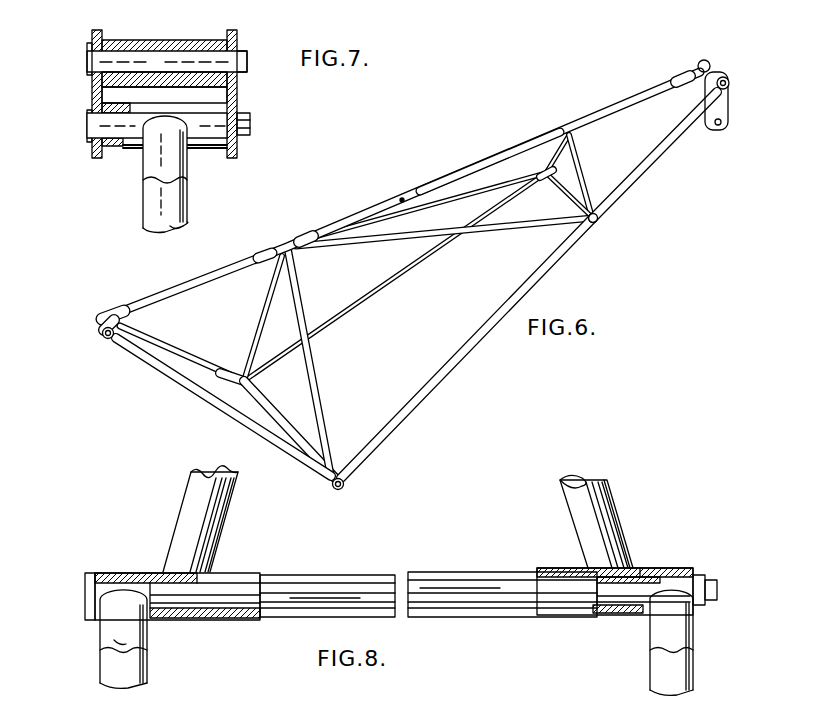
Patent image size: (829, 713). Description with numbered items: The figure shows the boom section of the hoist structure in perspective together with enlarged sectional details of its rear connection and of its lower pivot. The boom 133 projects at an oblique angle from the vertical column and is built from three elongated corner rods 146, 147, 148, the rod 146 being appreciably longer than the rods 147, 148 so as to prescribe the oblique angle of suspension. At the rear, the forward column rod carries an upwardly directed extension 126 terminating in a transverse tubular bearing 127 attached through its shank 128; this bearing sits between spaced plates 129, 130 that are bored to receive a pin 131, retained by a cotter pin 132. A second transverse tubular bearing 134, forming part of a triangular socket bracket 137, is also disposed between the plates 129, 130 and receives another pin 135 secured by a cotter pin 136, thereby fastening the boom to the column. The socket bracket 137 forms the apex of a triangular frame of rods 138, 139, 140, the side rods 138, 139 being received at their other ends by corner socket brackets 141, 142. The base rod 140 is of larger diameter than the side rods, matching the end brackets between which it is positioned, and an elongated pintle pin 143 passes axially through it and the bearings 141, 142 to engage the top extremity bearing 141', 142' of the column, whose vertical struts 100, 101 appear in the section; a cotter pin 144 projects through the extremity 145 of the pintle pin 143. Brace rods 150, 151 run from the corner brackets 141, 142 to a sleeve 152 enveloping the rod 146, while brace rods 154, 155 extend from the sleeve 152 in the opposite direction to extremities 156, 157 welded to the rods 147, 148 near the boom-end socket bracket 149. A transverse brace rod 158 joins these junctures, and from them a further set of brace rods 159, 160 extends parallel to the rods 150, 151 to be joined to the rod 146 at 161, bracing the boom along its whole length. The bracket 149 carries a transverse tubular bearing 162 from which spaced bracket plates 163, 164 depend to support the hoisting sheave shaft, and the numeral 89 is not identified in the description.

In FIG. 7, the upwardly directed extension 126 is at (184, 206).
In FIG. 7, the transverse tubular bearing 127 is at (198, 140).
In FIG. 7, the shank 128 is at (158, 164).
In FIG. 7, the spaced plate 129 is at (97, 100).
In FIG. 7, the spaced plate 130 is at (232, 93).
In FIG. 7, the pin 131 is at (92, 138).
In FIG. 7, the cotter pin 132 is at (240, 136).
In FIG. 6, the boom 133 is at (401, 197).
In FIG. 7, the transverse tubular bearing 134 is at (180, 40).
In FIG. 6, the transverse tubular bearing 134 is at (98, 318).
In FIG. 7, the pin 135 is at (100, 60).
In FIG. 7, the cotter pin 136 is at (240, 48).
In FIG. 6, the triangular socket bracket 137 is at (110, 345).
In FIG. 6, the side rod 138 is at (176, 353).
In FIG. 8, the side rod 138 is at (600, 478).
In FIG. 6, the side rod 139 is at (194, 388).
In FIG. 8, the side rod 139 is at (192, 496).
In FIG. 6, the base rod 140 is at (270, 412).
In FIG. 8, the base rod 140 is at (345, 575).
In FIG. 6, the corner socket bracket 141 is at (223, 359).
In FIG. 8, the corner socket bracket 141 is at (639, 524).
In FIG. 8, the top extremity bearing 141' is at (680, 549).
In FIG. 6, the corner socket bracket 142 is at (360, 492).
In FIG. 8, the corner socket bracket 142 is at (177, 549).
In FIG. 8, the top extremity bearing 142' is at (81, 577).
In FIG. 8, the pintle pin 143 is at (545, 585).
In FIG. 8, the cotter pin 144 is at (700, 574).
In FIG. 8, the extremity 145 is at (716, 584).
In FIG. 6, the corner rod 146 is at (483, 163).
In FIG. 6, the corner rod 147 is at (395, 282).
In FIG. 6, the corner rod 148 is at (470, 352).
In FIG. 6, the socket bracket 149 is at (730, 78).
In FIG. 6, the brace rod 150 is at (266, 318).
In FIG. 8, the brace rod 150 is at (580, 530).
In FIG. 6, the brace rod 151 is at (302, 302).
In FIG. 8, the brace rod 151 is at (234, 495).
In FIG. 6, the sleeve 152 is at (298, 236).
In FIG. 6, the triangular brace rod 154 is at (456, 198).
In FIG. 6, the triangular brace rod 155 is at (490, 226).
In FIG. 6, the brace rod extremity 156 is at (545, 170).
In FIG. 6, the brace rod extremity 157 is at (590, 228).
In FIG. 6, the transverse brace rod 158 is at (598, 220).
In FIG. 6, the triangular brace rod 159 is at (560, 146).
In FIG. 6, the triangular brace rod 160 is at (604, 200).
In FIG. 6, the joinder point 161 is at (580, 132).
In FIG. 6, the transverse tubular bearing 162 is at (705, 60).
In FIG. 6, the spaced bracket plate 163 is at (730, 106).
In FIG. 6, the spaced bracket plate 164 is at (688, 80).
In FIG. 8, the vertical strut 100 is at (695, 678).
In FIG. 8, the vertical strut 101 is at (100, 678).
In FIG. 8, the frame 89 is at (570, 709).